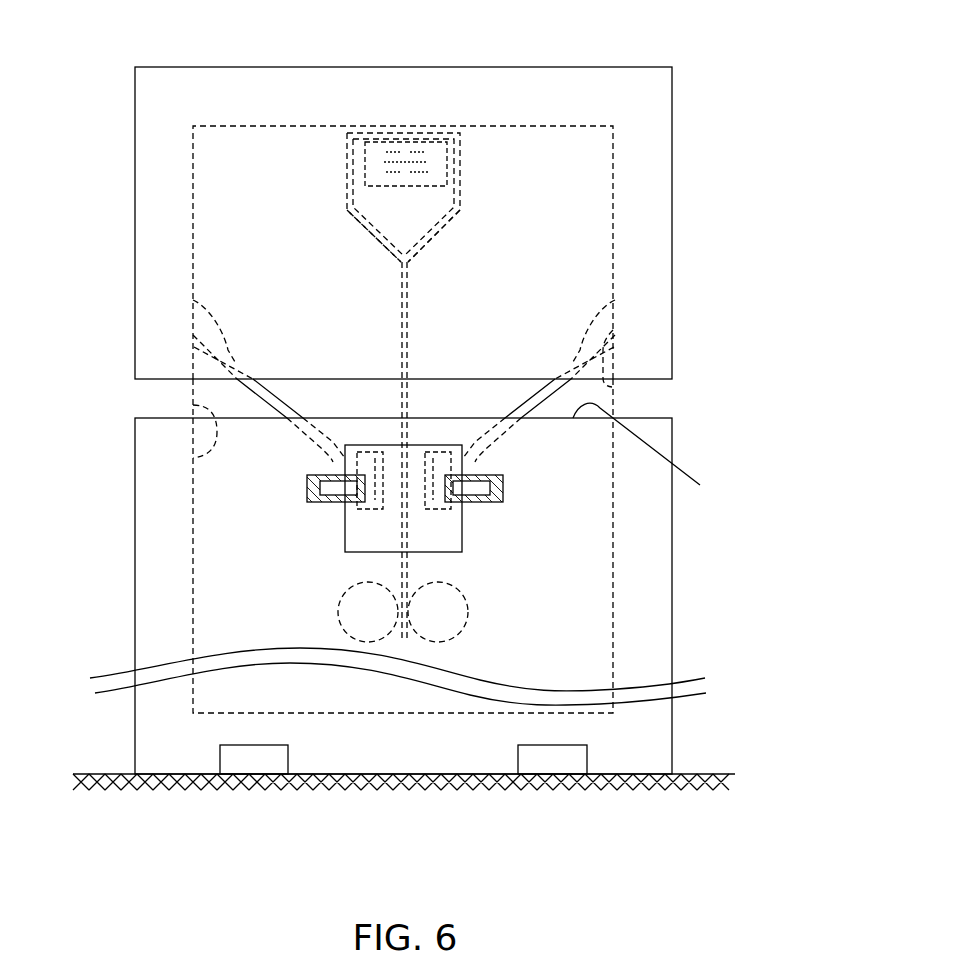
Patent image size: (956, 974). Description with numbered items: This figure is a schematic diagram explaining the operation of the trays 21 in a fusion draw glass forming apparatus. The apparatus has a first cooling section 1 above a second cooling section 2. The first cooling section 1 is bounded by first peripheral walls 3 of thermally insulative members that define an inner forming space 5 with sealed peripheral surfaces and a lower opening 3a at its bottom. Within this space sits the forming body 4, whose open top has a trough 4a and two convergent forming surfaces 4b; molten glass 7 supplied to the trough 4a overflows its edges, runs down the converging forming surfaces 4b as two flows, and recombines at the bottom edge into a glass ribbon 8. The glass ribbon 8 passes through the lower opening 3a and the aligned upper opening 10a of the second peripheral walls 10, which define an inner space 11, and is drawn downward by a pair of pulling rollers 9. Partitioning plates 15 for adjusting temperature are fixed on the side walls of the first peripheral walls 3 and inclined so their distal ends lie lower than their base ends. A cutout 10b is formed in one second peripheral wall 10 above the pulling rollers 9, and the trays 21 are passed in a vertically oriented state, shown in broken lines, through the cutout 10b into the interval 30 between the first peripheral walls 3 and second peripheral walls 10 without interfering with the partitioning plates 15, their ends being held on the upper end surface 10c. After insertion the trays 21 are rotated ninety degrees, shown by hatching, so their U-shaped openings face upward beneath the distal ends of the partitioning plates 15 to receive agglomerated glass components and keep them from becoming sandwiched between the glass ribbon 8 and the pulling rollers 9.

The first cooling section 1 is at (735, 145).
The second cooling section 2 is at (735, 514).
The first peripheral walls 3 is at (665, 193).
The lower opening 3a is at (612, 387).
The forming body 4 is at (404, 137).
The trough 4a is at (380, 130).
The convergent forming surfaces 4b is at (350, 232).
The inner forming space 5 is at (207, 160).
The molten glass 7 is at (425, 135).
The glass ribbon 8 is at (410, 272).
The pulling rollers 9 is at (340, 593).
The second peripheral walls 10 is at (405, 482).
The upper opening 10a is at (193, 405).
The cutout 10b is at (452, 530).
The upper end surface 10c is at (663, 451).
The inner space 11 is at (200, 555).
The partitioning plates 15 is at (193, 300).
The trays 21 is at (315, 503).
The interval 30 is at (677, 400).